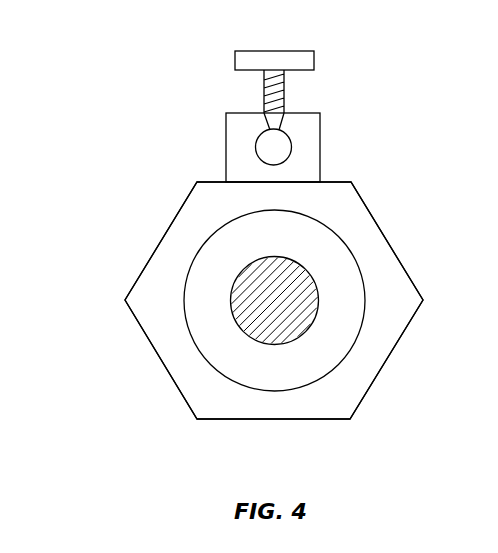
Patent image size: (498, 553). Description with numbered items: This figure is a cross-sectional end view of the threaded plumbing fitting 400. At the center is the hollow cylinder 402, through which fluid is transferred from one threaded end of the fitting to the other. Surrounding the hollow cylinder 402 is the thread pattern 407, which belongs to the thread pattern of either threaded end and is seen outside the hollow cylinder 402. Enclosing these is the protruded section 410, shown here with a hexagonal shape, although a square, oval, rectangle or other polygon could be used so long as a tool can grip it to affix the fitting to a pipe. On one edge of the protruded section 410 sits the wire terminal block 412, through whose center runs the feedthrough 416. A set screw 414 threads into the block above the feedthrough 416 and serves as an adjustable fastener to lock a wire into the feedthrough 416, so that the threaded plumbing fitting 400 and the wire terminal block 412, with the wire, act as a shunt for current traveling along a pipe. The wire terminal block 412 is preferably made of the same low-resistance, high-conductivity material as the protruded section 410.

The threaded plumbing fitting 400 is at (128, 427).
The hollow cylinder 402 is at (275, 345).
The thread pattern 407 is at (190, 331).
The protruded section 410 is at (387, 358).
The wire terminal block 412 is at (307, 113).
The set screw 414 is at (314, 62).
The feedthrough 416 is at (273, 147).